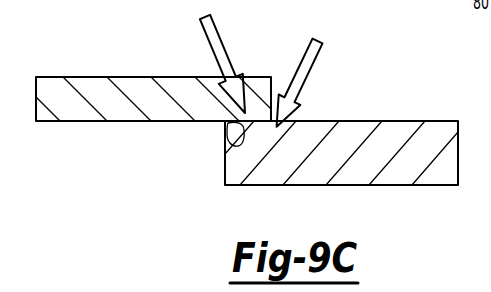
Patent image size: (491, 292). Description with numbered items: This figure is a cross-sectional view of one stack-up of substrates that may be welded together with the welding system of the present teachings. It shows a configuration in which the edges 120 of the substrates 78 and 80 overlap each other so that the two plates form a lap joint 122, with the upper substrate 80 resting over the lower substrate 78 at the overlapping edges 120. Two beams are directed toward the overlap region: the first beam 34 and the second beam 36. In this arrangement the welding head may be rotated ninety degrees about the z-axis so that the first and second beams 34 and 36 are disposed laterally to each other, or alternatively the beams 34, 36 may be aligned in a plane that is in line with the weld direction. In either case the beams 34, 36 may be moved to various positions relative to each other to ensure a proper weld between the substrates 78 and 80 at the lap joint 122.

The substrate 80 is at (77, 112).
The substrate 78 is at (392, 177).
The second beam 36 is at (214, 42).
The first beam 34 is at (306, 78).
The edges 120 is at (226, 102).
The lap joint 122 is at (264, 124).